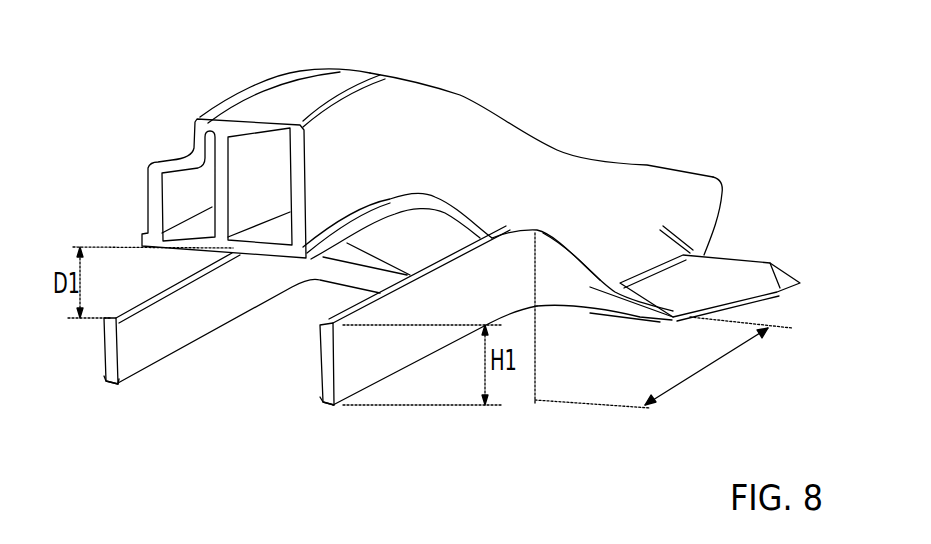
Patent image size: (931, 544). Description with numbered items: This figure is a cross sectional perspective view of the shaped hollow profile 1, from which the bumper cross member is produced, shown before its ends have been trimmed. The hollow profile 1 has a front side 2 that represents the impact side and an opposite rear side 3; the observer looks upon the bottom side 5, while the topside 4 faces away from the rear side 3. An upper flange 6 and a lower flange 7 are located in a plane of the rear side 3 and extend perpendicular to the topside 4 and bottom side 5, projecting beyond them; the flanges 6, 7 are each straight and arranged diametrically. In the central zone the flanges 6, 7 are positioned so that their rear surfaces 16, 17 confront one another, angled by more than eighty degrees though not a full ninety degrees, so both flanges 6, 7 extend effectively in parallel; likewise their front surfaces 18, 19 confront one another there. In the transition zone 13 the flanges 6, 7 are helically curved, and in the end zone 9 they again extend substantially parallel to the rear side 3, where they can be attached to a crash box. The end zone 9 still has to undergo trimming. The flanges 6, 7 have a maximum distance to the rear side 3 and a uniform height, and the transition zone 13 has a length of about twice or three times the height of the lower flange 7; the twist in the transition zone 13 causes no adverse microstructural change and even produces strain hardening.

The hollow profile 1 is at (658, 158).
The front side 2 is at (340, 78).
The rear side 3 is at (387, 243).
The topside 4 is at (557, 173).
The bottom side 5 is at (150, 200).
The upper flange 6 is at (110, 387).
The lower flange 7 is at (322, 397).
The end zone 9 is at (710, 273).
The transition zone 13 is at (700, 372).
The rear surface of upper flange 16 is at (133, 345).
The rear surface of lower flange 17 is at (318, 363).
The front surface of upper flange 18 is at (107, 353).
The front surface of lower flange 19 is at (340, 370).